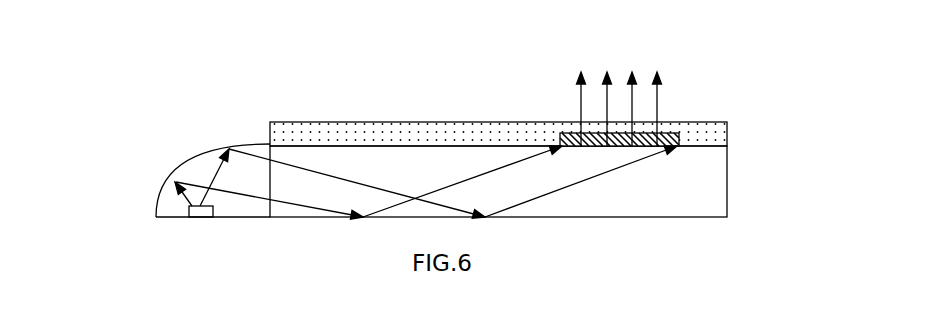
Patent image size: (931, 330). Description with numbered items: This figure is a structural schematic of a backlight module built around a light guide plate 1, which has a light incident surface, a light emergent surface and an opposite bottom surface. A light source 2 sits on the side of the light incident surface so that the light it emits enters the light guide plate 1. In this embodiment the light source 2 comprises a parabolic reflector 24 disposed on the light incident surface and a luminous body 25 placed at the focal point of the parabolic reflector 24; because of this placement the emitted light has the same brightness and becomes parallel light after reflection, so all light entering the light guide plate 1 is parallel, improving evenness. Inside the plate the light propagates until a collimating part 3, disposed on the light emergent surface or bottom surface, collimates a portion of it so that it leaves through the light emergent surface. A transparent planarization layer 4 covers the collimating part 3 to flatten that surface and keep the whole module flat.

The light guide plate 1 is at (727, 177).
The light source 2 is at (113, 117).
The collimating part 3 is at (665, 137).
The planarization layer 4 is at (727, 134).
The parabolic reflector 24 is at (196, 161).
The luminous body 25 is at (172, 181).